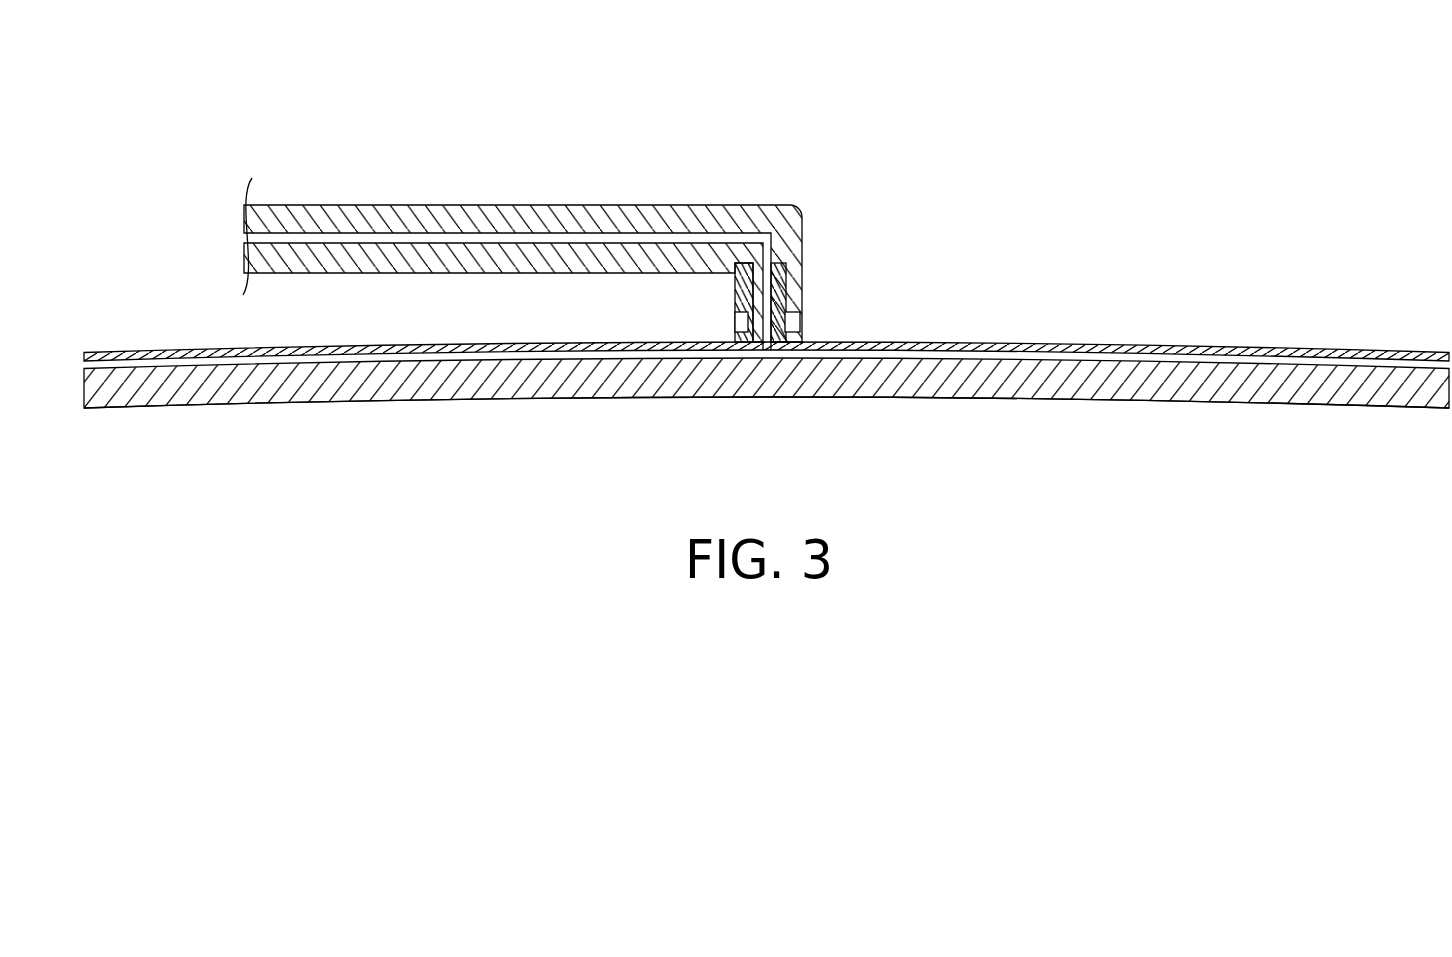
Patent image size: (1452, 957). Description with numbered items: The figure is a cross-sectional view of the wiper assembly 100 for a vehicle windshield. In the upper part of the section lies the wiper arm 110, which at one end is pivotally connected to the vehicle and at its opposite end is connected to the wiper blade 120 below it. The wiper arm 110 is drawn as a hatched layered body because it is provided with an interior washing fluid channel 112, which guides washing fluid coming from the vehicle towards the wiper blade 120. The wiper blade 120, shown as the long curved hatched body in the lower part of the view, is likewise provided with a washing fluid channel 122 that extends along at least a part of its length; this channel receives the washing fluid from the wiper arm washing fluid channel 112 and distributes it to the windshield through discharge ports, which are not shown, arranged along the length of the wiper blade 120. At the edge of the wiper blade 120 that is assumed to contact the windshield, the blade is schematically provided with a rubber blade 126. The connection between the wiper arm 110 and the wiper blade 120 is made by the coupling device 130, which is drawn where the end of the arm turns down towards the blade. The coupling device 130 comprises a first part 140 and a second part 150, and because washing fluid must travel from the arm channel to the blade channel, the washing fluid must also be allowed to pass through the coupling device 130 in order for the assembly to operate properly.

The wiper assembly 100 is at (955, 108).
The wiper arm 110 is at (511, 205).
The interior washing fluid channel 112 is at (415, 238).
The wiper blade 120 is at (740, 368).
The washing fluid channel 122 is at (578, 352).
The rubber blade 126 is at (1052, 399).
The coupling device 130 is at (795, 277).
The first part 140 is at (750, 322).
The second part 150 is at (803, 304).